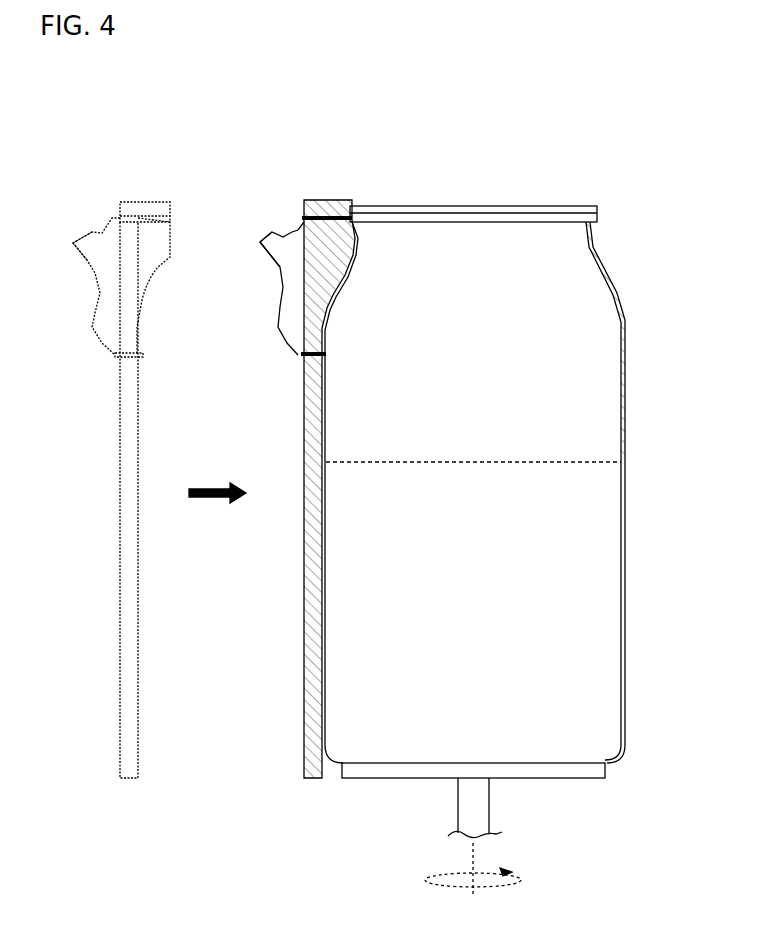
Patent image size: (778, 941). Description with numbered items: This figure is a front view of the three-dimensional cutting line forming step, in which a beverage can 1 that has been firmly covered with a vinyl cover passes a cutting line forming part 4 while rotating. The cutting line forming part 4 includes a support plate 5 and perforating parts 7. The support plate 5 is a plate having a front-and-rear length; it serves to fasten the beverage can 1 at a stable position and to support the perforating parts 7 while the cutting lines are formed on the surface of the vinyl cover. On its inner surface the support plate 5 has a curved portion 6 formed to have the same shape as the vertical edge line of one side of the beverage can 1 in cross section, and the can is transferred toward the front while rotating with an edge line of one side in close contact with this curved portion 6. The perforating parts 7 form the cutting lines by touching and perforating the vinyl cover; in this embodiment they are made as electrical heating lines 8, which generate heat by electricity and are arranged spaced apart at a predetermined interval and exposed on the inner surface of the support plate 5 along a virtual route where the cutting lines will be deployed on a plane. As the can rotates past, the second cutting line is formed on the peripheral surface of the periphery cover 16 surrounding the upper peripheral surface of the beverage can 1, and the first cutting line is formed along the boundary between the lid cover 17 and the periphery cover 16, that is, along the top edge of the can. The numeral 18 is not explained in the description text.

The beverage can 1 is at (368, 750).
The cutting line forming part 4 is at (340, 93).
The support plate 5 is at (143, 202).
The curved portion 6 is at (172, 262).
The perforating parts 7 is at (292, 217).
The electrical heating lines 8 is at (72, 243).
The periphery cover 16 is at (627, 328).
The lid cover 17 is at (533, 206).
The rotary shaft 18 is at (490, 793).